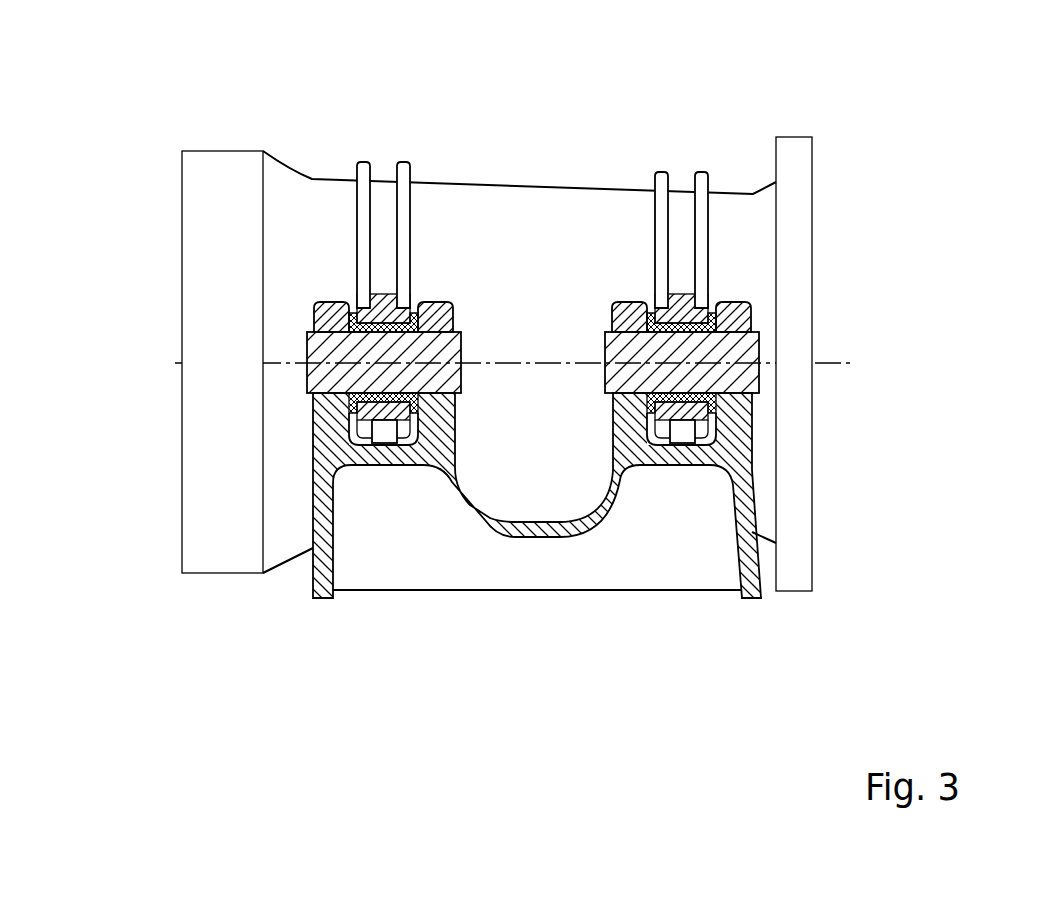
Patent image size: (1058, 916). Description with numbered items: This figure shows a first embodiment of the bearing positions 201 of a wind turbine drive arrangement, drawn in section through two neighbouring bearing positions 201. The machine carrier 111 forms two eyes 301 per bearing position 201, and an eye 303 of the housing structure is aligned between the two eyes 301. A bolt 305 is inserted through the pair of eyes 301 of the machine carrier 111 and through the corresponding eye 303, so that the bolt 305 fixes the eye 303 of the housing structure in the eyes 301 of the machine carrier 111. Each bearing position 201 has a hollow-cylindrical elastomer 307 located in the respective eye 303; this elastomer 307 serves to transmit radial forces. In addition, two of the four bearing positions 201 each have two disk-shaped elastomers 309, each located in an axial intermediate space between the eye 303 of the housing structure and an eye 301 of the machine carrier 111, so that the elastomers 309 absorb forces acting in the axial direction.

The machine carrier 111 is at (323, 570).
The bearing position 201 is at (290, 350).
The eye 301 is at (447, 302).
The eye 303 is at (387, 313).
The bolt 305 is at (333, 373).
The hollow-cylindrical elastomer 307 is at (386, 425).
The disk-shaped elastomer 309 is at (352, 313).